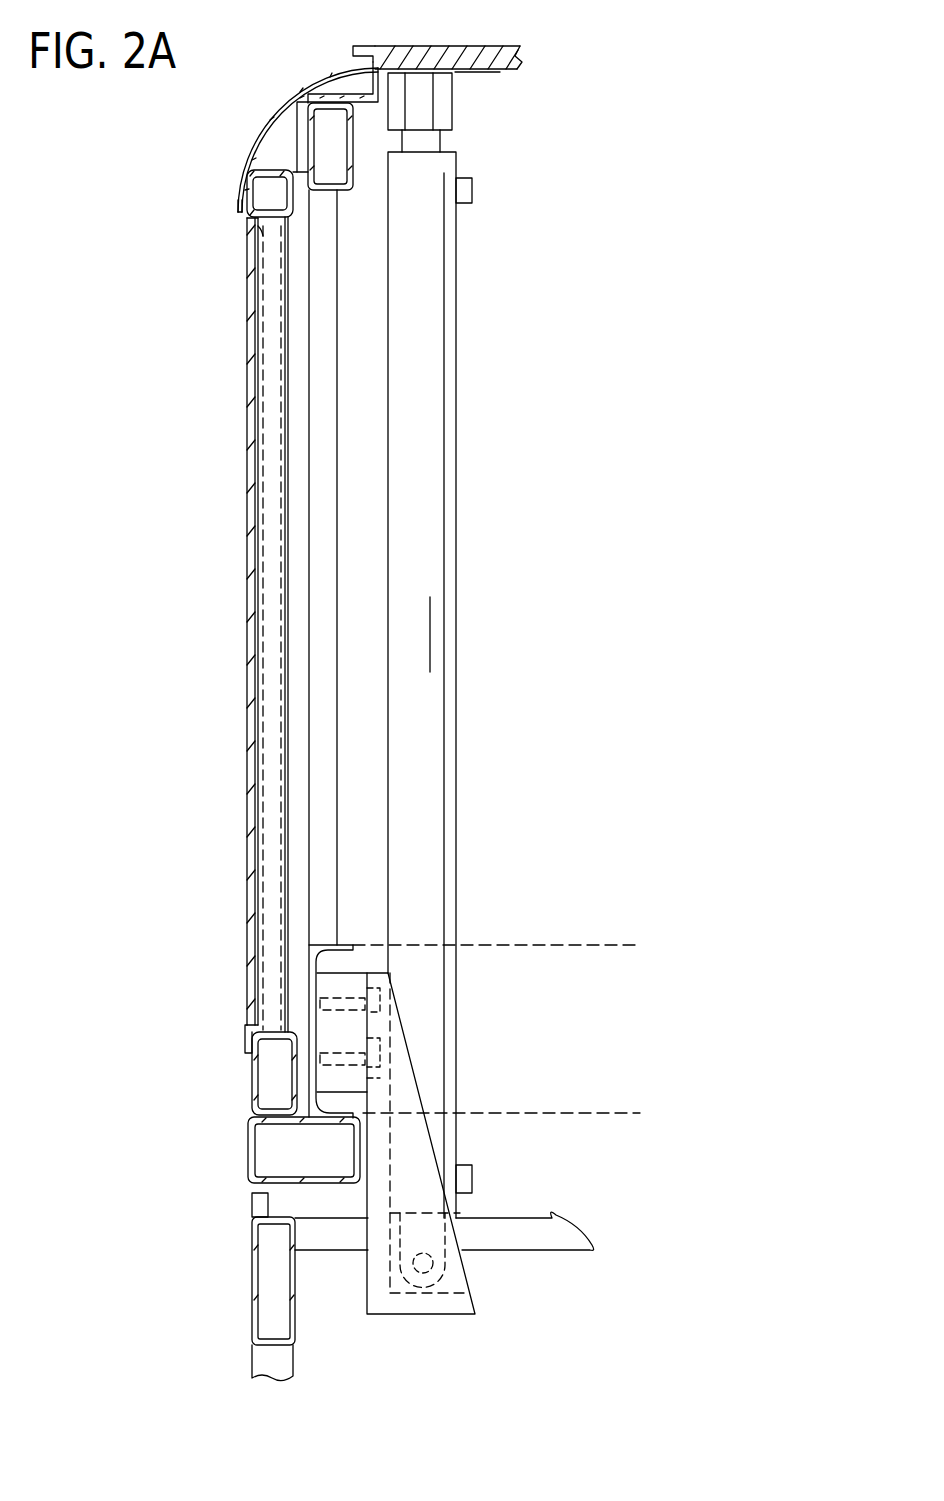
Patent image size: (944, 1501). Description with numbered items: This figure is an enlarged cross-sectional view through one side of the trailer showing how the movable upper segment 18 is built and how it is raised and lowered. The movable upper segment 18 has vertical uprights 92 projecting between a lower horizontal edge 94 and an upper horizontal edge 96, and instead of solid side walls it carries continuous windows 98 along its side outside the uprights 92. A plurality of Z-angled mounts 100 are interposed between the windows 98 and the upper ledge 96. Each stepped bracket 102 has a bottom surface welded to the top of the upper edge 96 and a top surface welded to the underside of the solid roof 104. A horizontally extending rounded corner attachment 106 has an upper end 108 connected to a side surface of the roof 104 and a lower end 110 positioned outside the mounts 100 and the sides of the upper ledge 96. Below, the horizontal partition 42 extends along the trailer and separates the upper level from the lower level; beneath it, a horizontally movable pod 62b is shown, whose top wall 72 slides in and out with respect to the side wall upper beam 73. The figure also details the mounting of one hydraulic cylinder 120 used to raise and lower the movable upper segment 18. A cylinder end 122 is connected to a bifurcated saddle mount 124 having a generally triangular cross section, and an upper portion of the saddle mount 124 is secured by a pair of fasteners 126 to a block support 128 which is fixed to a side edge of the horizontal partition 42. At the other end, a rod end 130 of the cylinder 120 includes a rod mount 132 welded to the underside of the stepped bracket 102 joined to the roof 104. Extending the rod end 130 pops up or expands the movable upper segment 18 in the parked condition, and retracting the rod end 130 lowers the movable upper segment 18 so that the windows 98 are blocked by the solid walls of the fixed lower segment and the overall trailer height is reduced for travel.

The movable upper segment 18 is at (224, 550).
The horizontal partition 42 is at (526, 946).
The horizontally movable pod 62b is at (242, 1301).
The top wall 72 is at (507, 1247).
The side wall upper beam 73 is at (252, 1150).
The vertical upright 92 is at (272, 370).
The lower horizontal edge 94 is at (262, 1066).
The upper horizontal edge 96 is at (247, 208).
The continuous window 98 is at (258, 468).
The Z-angled mount 100 is at (264, 230).
The stepped bracket 102 is at (348, 100).
The solid roof 104 is at (455, 46).
The rounded corner attachment 106 is at (258, 121).
The upper end 108 is at (364, 45).
The lower end 110 is at (262, 186).
The hydraulic cylinder 120 is at (435, 653).
The cylinder end 122 is at (418, 1250).
The saddle mount 124 is at (418, 1190).
The fastener 126 is at (377, 1007).
The block support 128 is at (348, 980).
The rod end 130 is at (445, 115).
The rod mount 132 is at (455, 78).